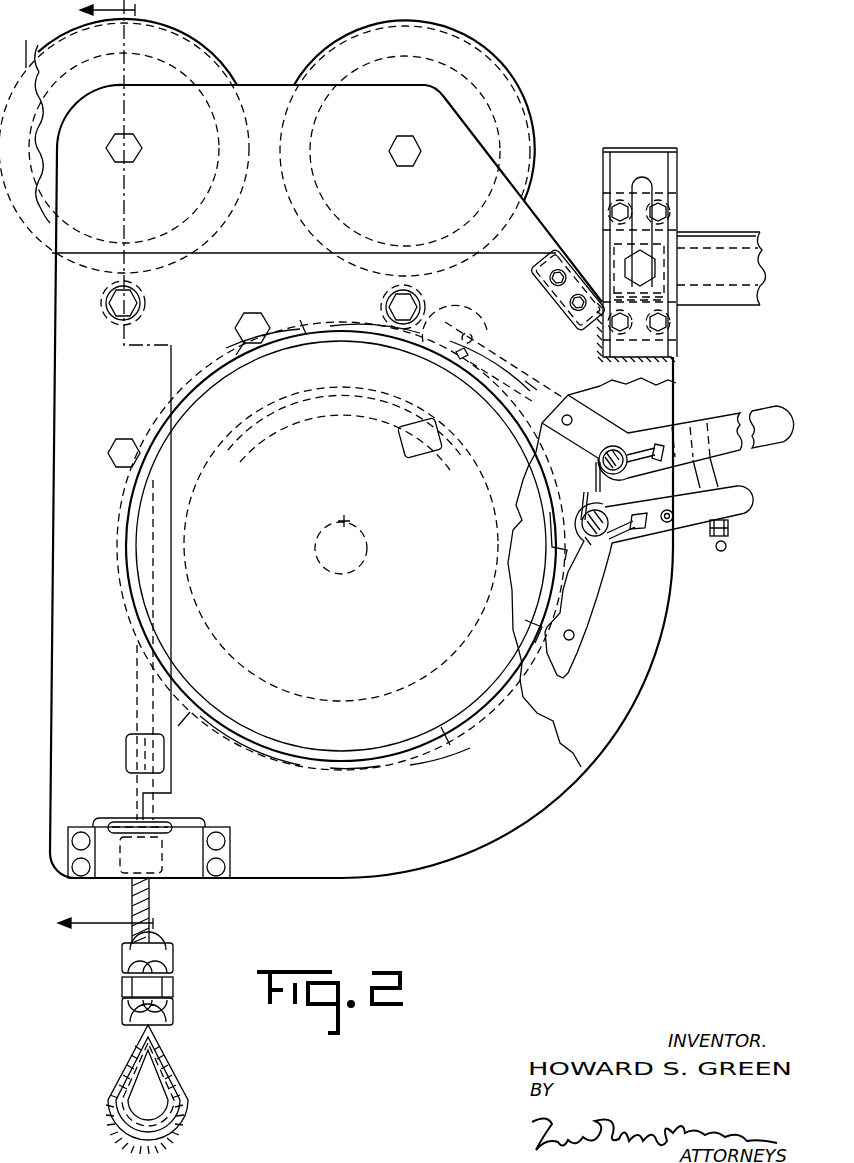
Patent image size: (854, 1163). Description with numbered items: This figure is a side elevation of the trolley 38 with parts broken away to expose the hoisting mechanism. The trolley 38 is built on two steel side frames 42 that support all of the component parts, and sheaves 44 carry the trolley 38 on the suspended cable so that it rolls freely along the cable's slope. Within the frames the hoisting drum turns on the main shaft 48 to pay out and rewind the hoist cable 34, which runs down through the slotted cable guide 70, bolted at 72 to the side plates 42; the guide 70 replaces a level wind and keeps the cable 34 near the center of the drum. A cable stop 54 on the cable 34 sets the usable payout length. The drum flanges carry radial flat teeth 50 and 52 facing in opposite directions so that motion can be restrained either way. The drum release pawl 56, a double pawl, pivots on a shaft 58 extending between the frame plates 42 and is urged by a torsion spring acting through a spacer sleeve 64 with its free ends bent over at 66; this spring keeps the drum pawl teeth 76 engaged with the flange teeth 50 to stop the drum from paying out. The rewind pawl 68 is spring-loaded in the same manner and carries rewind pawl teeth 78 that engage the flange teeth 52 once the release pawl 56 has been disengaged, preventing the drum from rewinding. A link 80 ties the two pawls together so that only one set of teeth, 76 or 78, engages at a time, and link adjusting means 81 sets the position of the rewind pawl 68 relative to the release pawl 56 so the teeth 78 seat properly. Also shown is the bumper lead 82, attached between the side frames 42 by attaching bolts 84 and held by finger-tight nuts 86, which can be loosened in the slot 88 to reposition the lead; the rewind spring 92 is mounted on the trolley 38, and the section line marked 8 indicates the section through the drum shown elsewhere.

The section line 8 is at (108, 468).
The hoist cable 34 is at (150, 900).
The trolley 38 is at (552, 810).
The side frames 42 is at (412, 860).
The sheaves 44 is at (512, 100).
The main shaft 48 is at (344, 517).
The drum flange teeth 50 is at (550, 512).
The drum flange teeth 52 is at (545, 622).
The cable stop 54 is at (412, 458).
The drum release pawl 56 is at (772, 418).
The shaft 58 is at (614, 449).
The spacer sleeve 64 is at (601, 510).
The bent-over free ends 66 is at (597, 486).
The rewind pawl 68 is at (750, 497).
The slotted cable guide 70 is at (193, 822).
The bolts 72 is at (220, 841).
The drum pawl teeth 76 is at (490, 344).
The drum rewind pawl teeth 78 is at (565, 628).
The link 80 is at (713, 468).
The link adjusting means 81 is at (727, 537).
The bumper lead 82 is at (727, 232).
The attaching bolts 84 is at (661, 208).
The nuts 86 is at (641, 270).
The slot 88 is at (643, 185).
The rewind spring 92 is at (246, 418).